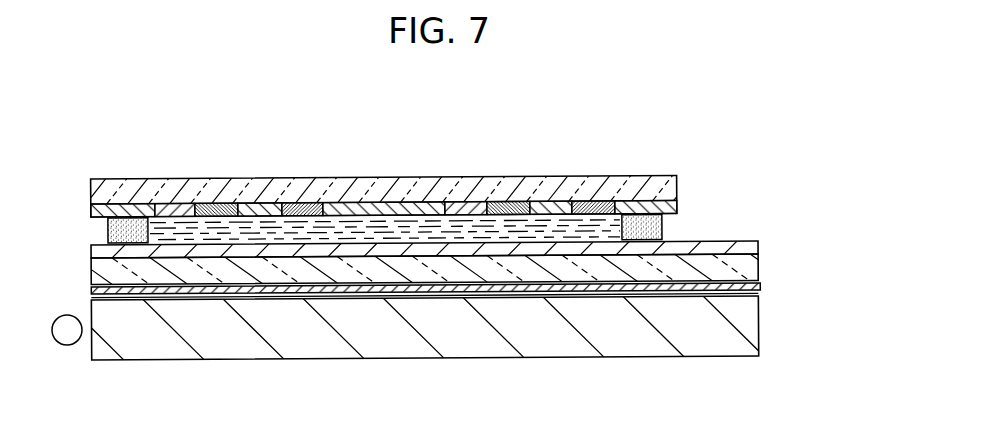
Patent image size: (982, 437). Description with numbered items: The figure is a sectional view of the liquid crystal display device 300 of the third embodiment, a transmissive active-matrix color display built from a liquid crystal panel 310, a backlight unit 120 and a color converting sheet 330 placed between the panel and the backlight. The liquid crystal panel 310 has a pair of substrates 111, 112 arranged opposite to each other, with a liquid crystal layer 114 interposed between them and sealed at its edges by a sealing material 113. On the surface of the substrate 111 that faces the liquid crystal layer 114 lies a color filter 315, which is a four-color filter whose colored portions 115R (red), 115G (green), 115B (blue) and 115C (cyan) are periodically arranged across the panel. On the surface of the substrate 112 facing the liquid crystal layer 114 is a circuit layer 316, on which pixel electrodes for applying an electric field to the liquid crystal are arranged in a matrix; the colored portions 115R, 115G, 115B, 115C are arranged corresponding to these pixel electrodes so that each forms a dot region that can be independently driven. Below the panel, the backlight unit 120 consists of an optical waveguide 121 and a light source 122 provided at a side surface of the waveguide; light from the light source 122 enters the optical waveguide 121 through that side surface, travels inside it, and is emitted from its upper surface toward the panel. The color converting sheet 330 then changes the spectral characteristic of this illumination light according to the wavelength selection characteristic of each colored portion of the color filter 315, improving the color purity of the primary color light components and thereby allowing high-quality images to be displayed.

The liquid crystal display device 300 is at (786, 162).
The liquid crystal panel 310 is at (773, 277).
The substrate 111 is at (97, 196).
The substrate 112 is at (102, 274).
The sealing material 113 is at (108, 231).
The liquid crystal layer 114 is at (402, 230).
The red colored portion 115R is at (175, 202).
The green colored portion 115G is at (217, 202).
The blue colored portion 115B is at (256, 202).
The cyan colored portion 115C is at (320, 202).
The color filter 315 is at (671, 205).
The circuit layer 316 is at (725, 248).
The color converting sheet 330 is at (757, 288).
The backlight unit 120 is at (773, 295).
The optical waveguide 121 is at (138, 347).
The light source 122 is at (66, 340).